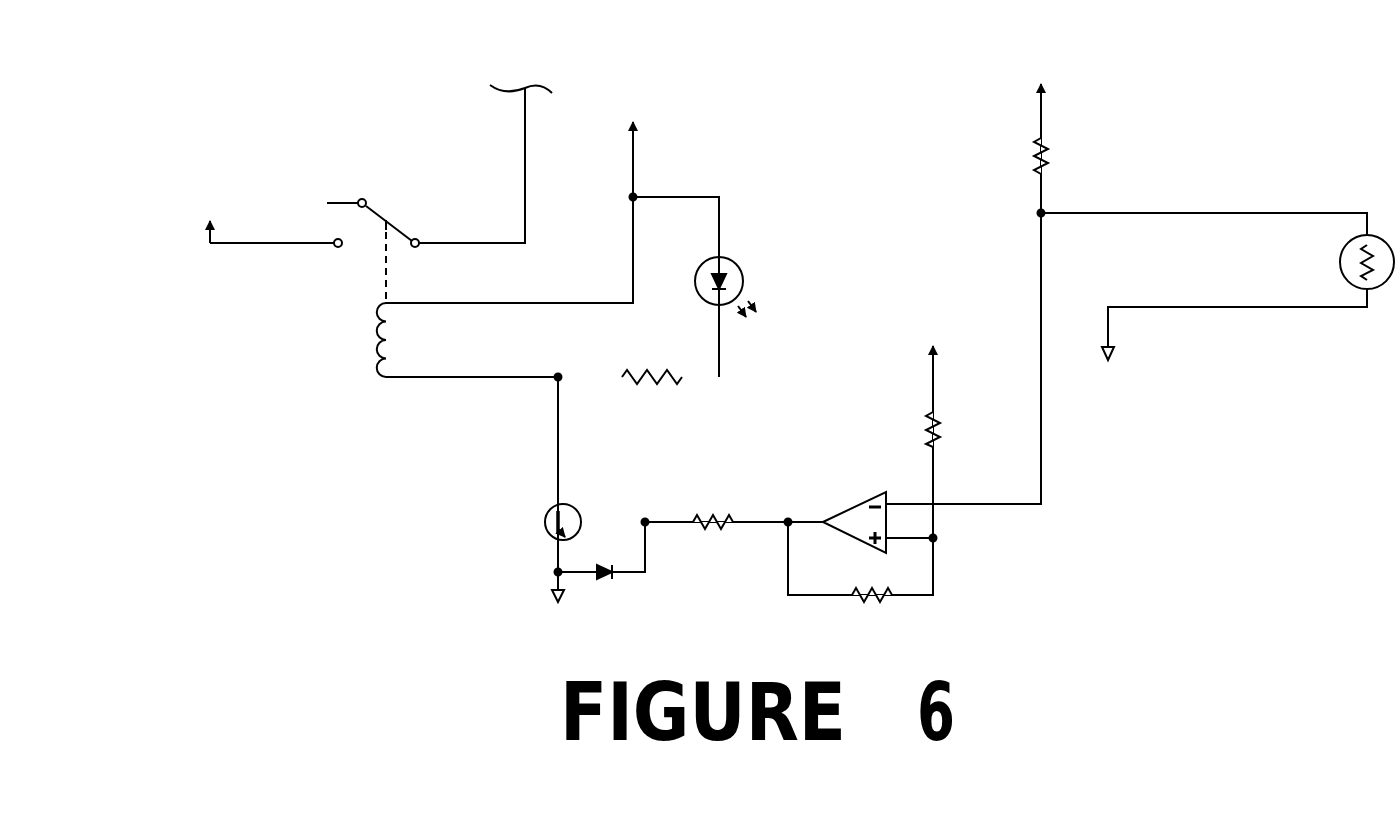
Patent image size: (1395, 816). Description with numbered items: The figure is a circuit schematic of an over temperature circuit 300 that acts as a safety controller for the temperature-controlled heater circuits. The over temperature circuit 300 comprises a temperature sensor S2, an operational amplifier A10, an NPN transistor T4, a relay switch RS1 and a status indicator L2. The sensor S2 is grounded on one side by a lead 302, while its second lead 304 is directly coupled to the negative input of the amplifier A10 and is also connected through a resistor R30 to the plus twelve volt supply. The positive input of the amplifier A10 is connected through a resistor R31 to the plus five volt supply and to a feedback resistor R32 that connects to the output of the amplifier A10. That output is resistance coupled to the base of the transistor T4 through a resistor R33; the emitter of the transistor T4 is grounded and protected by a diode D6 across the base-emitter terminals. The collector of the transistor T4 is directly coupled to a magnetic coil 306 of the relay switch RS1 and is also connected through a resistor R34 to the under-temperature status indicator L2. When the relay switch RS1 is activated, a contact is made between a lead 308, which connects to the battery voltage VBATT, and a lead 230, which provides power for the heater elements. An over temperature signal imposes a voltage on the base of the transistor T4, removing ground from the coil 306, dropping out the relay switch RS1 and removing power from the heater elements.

The over temperature circuit 300 is at (232, 399).
The lead 308 is at (295, 243).
The lead 230 is at (525, 172).
The magnetic coil 306 is at (383, 343).
The relay switch RS1 is at (322, 287).
The status indicator L2 is at (733, 262).
The resistor R34 is at (653, 385).
The NPN transistor T4 is at (575, 510).
The diode D6 is at (612, 573).
The resistor R33 is at (718, 530).
The operational amplifier A10 is at (880, 493).
The resistor R31 is at (928, 433).
The feedback resistor R32 is at (882, 592).
The resistor R30 is at (1033, 165).
The temperature sensor S2 is at (1340, 253).
The second lead 304 is at (1253, 213).
The lead 302 is at (1192, 307).